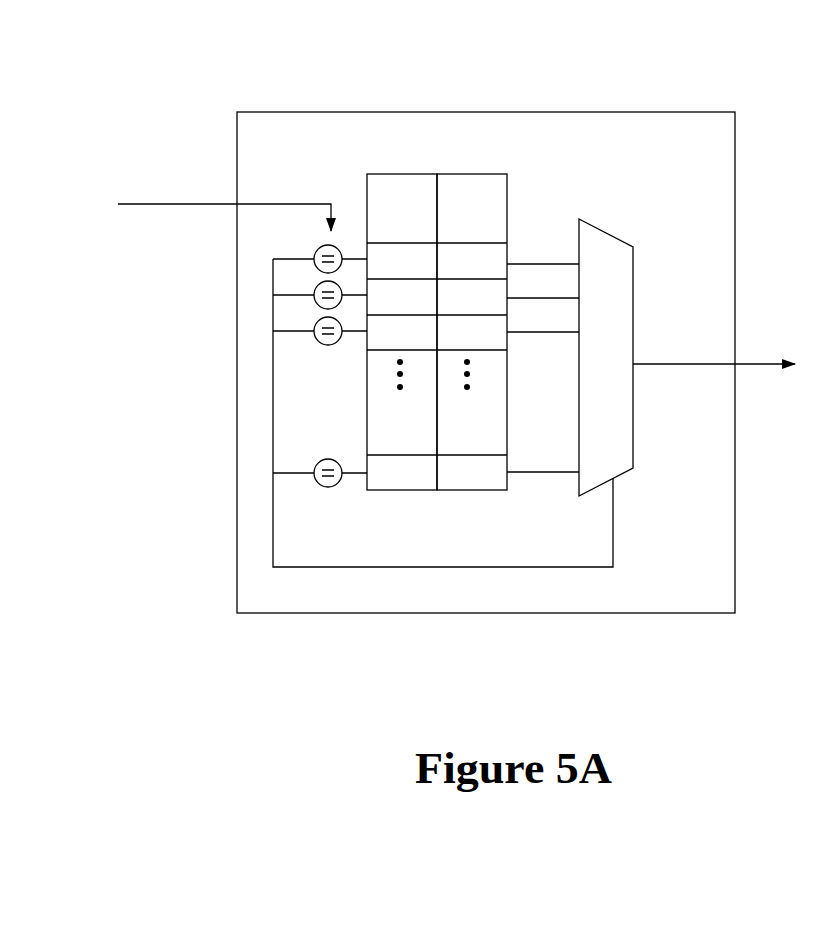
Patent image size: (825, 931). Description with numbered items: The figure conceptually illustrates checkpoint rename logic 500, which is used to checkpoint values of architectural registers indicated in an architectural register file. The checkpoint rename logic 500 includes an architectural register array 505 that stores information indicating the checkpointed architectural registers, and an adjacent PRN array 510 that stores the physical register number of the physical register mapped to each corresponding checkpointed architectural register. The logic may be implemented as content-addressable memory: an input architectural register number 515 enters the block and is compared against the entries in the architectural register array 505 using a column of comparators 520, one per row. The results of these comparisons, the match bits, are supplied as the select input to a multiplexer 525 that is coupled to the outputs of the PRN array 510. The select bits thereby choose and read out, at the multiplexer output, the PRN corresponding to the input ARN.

The checkpoint rename logic 500 is at (430, 112).
The architectural register array 505 is at (407, 490).
The PRN array 510 is at (468, 490).
The input architectural register number 515 is at (152, 203).
The comparators 520 is at (310, 367).
The multiplexer 525 is at (607, 233).